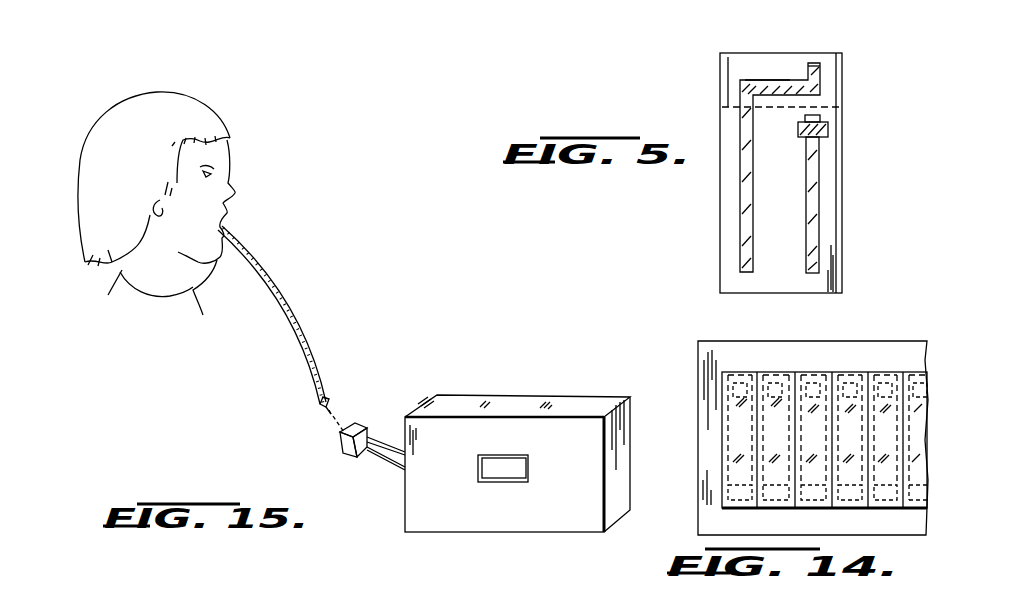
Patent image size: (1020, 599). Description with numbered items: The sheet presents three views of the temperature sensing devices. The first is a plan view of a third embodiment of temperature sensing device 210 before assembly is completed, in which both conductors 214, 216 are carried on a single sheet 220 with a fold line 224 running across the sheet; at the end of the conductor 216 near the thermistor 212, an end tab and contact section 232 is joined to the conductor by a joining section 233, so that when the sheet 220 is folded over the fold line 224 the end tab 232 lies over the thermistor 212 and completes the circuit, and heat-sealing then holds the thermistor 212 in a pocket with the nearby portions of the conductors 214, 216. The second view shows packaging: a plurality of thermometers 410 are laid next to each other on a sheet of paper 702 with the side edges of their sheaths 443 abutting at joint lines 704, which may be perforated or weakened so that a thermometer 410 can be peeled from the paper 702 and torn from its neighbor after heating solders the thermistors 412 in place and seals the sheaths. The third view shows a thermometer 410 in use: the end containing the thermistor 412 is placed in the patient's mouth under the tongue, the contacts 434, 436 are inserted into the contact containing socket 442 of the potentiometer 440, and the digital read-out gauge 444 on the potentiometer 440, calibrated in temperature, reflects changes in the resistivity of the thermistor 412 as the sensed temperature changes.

In FIG. 15, the thermistor 412 is at (222, 227).
In FIG. 14, the thermistor 412 is at (733, 387).
In FIG. 15, the thermometer 410 is at (328, 338).
In FIG. 14, the thermometer 410 is at (780, 368).
In FIG. 15, the contact 434 is at (332, 405).
In FIG. 15, the contact 436 is at (384, 385).
In FIG. 14, the contact 436 is at (722, 492).
In FIG. 15, the contact containing socket 442 is at (350, 457).
In FIG. 15, the potentiometer 440 is at (537, 395).
In FIG. 15, the digital read-out gauge 444 is at (507, 482).
In FIG. 5, the temperature sensing device 210 is at (708, 110).
In FIG. 5, the joining section 233 is at (763, 80).
In FIG. 5, the end tab and contact section 232 is at (818, 78).
In FIG. 5, the fold line 224 is at (840, 92).
In FIG. 5, the thermistor 212 is at (828, 127).
In FIG. 5, the conductor 214 is at (813, 200).
In FIG. 5, the conductor 216 is at (740, 208).
In FIG. 5, the sheet 220 is at (842, 238).
In FIG. 14, the sheet of paper 702 is at (708, 372).
In FIG. 14, the joint lines 704 is at (797, 412).
In FIG. 14, the sheath layer 443 is at (740, 443).